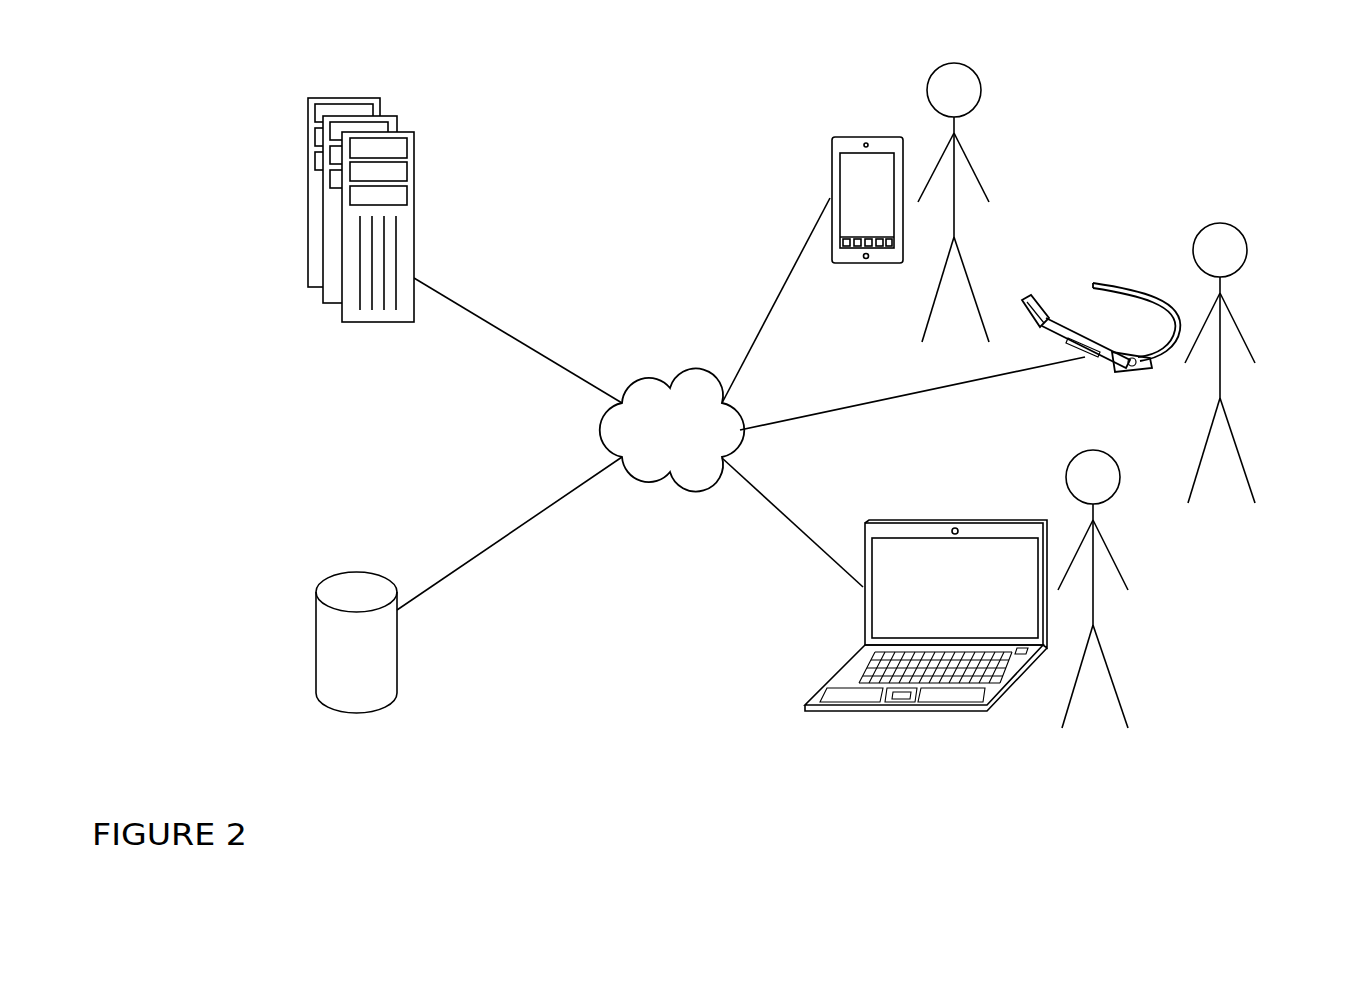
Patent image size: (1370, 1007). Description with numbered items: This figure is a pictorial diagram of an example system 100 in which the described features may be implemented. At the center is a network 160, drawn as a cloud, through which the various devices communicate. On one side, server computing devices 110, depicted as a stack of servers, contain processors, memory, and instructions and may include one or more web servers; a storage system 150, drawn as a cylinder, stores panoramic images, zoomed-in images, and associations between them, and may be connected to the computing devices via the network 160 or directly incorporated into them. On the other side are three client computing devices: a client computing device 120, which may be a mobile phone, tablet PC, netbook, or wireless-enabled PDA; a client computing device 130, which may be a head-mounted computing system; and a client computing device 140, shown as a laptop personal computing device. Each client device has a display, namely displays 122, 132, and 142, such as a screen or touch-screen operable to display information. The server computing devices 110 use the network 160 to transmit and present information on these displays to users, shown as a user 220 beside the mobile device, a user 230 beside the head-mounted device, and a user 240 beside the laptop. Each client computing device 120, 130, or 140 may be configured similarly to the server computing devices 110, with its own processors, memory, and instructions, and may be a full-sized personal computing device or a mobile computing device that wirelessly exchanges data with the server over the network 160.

The system 100 is at (188, 791).
The computing device 110 is at (414, 175).
The client computing device 120 is at (812, 200).
The display 122 is at (836, 198).
The client computing device 130 is at (1101, 321).
The display 132 is at (1145, 366).
The client computing device 140 is at (901, 615).
The display 142 is at (866, 628).
The storage system 150 is at (397, 660).
The network 160 is at (741, 404).
The user 220 is at (988, 190).
The user 230 is at (1253, 350).
The user 240 is at (1125, 578).